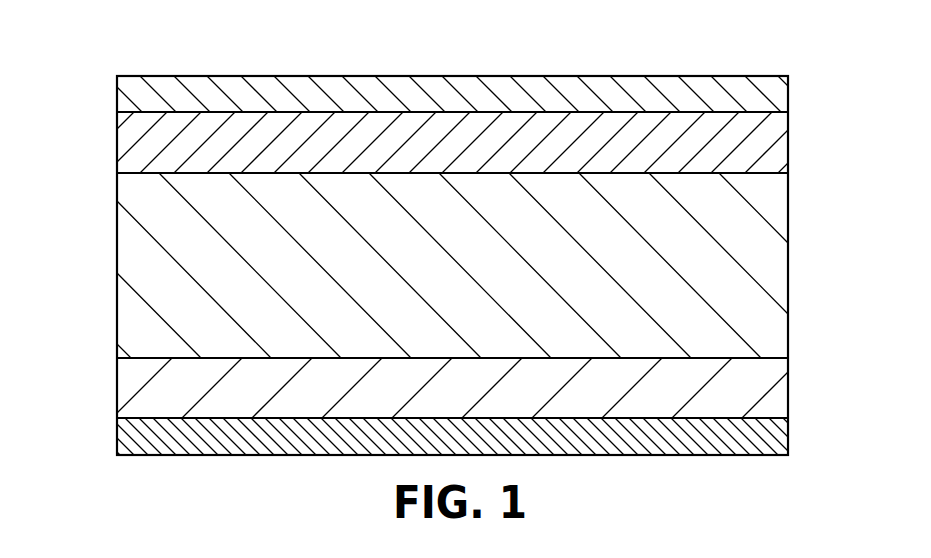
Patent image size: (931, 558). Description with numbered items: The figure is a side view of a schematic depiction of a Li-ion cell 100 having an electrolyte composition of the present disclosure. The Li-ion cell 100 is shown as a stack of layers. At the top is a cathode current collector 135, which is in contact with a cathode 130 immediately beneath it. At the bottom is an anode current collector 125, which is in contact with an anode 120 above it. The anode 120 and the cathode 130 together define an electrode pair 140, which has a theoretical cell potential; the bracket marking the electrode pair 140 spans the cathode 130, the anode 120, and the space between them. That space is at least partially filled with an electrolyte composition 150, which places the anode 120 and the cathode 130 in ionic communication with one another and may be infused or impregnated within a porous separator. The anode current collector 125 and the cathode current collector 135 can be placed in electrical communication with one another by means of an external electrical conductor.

The Li-ion cell 100 is at (99, 59).
The cathode current collector 135 is at (792, 90).
The cathode 130 is at (792, 130).
The electrode pair 140 is at (790, 144).
The electrolyte composition 150 is at (115, 262).
The anode 120 is at (115, 388).
The anode current collector 125 is at (115, 440).